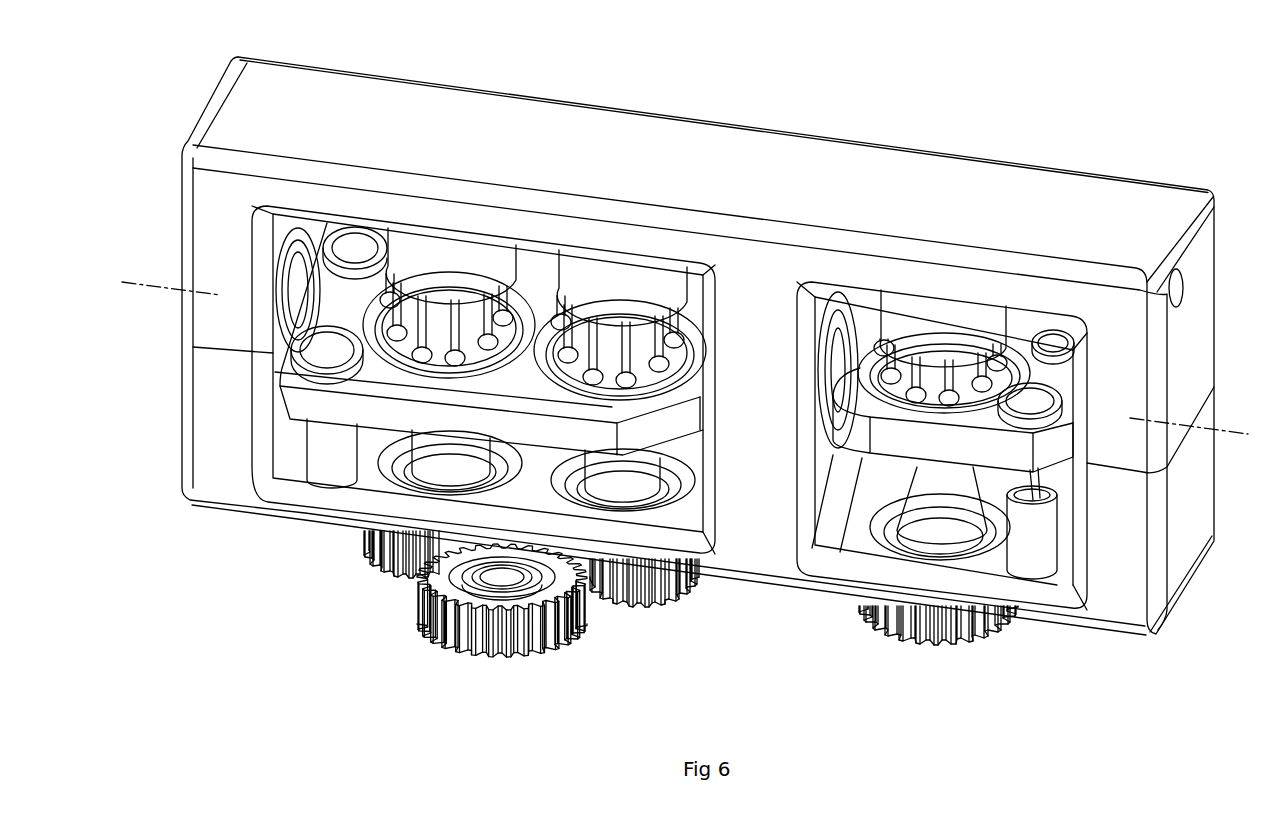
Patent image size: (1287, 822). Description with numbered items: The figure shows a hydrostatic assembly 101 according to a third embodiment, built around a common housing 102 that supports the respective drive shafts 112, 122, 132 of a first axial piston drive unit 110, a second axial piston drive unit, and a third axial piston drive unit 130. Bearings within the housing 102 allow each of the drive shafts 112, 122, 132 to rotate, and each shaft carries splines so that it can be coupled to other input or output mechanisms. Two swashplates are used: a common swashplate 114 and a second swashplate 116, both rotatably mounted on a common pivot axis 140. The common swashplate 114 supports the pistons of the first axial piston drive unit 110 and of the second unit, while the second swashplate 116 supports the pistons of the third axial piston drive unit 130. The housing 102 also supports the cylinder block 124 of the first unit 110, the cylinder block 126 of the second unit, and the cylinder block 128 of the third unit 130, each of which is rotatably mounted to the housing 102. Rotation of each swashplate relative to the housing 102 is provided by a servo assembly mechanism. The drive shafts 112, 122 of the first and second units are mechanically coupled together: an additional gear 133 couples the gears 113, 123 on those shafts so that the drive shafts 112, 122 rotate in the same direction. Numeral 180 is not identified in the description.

The hydrostatic assembly 101 is at (694, 393).
The common housing 102 is at (1190, 462).
The first axial piston drive unit 110 is at (633, 278).
The drive shaft 112 is at (655, 480).
The gear 113 is at (636, 607).
The common swashplate 114 is at (380, 372).
The second swashplate 116 is at (1057, 455).
The drive shaft 122 is at (462, 452).
The gear 123 is at (380, 563).
The cylinder block 124 is at (583, 275).
The cylinder block 126 is at (418, 250).
The cylinder block 128 is at (985, 326).
The third axial piston drive unit 130 is at (925, 320).
The drive shaft 132 is at (920, 512).
The additional gear 133 is at (510, 654).
The common pivot axis 140 is at (150, 287).
The bearing 180 is at (458, 262).